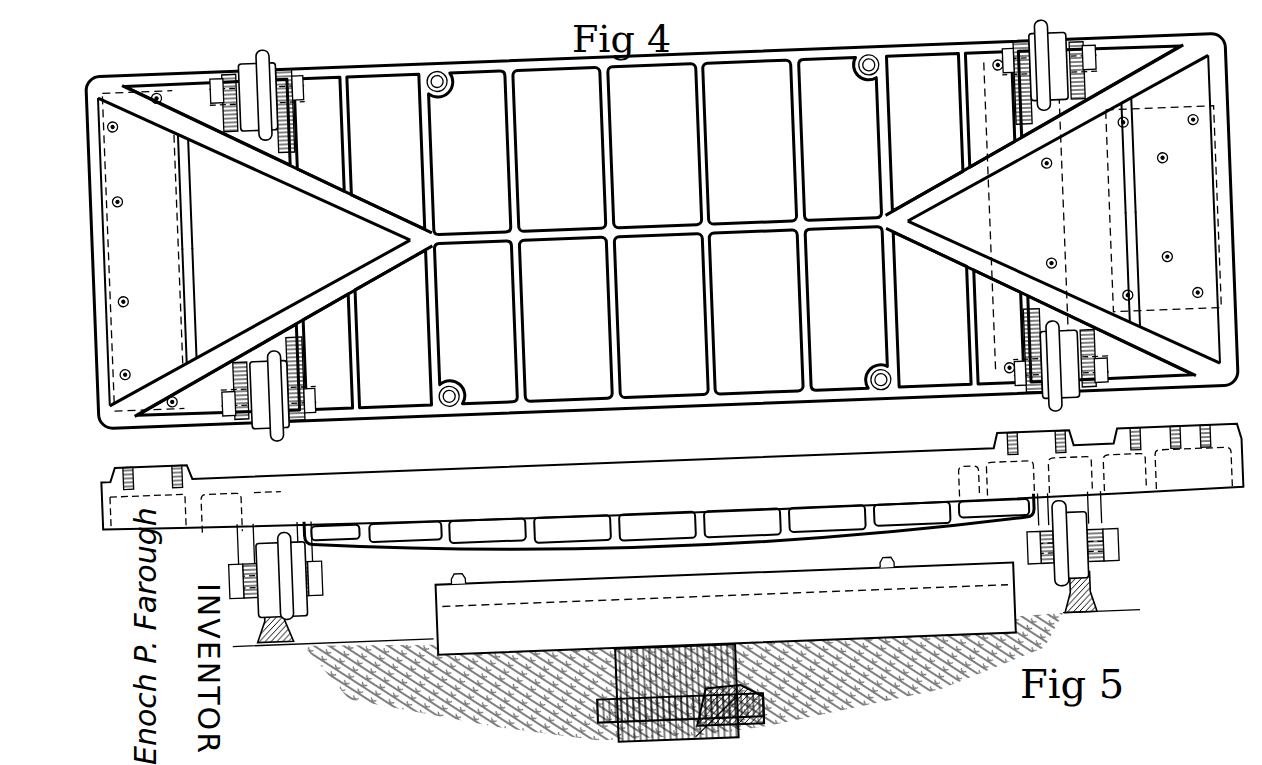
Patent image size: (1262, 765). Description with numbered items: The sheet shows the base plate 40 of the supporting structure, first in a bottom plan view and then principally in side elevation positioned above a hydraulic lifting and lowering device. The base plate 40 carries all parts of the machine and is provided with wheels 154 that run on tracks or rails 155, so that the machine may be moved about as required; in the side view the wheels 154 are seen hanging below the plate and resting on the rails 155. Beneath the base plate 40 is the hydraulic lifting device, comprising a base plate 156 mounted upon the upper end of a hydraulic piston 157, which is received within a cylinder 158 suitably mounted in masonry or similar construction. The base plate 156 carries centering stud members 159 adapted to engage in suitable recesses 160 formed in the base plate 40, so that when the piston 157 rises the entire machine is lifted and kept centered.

In FIG. 4, the base plate 40 is at (417, 64).
In FIG. 5, the base plate 40 is at (406, 546).
In FIG. 4, the wheels 154 is at (264, 428).
In FIG. 5, the wheels 154 is at (297, 608).
In FIG. 5, the tracks or rails 155 is at (288, 632).
In FIG. 5, the base plate of hydraulic lifting device 156 is at (915, 580).
In FIG. 5, the hydraulic piston 157 is at (707, 722).
In FIG. 5, the cylinder 158 is at (745, 722).
In FIG. 5, the centering stud members 159 is at (465, 574).
In FIG. 4, the recesses 160 is at (869, 55).